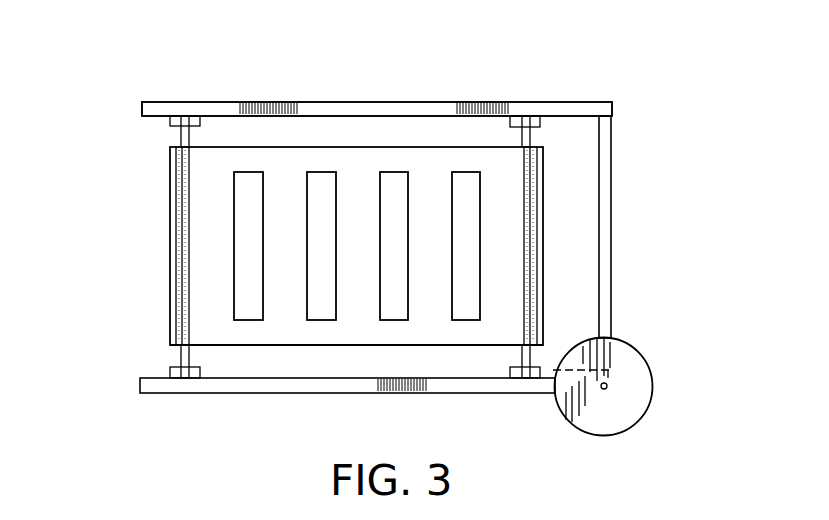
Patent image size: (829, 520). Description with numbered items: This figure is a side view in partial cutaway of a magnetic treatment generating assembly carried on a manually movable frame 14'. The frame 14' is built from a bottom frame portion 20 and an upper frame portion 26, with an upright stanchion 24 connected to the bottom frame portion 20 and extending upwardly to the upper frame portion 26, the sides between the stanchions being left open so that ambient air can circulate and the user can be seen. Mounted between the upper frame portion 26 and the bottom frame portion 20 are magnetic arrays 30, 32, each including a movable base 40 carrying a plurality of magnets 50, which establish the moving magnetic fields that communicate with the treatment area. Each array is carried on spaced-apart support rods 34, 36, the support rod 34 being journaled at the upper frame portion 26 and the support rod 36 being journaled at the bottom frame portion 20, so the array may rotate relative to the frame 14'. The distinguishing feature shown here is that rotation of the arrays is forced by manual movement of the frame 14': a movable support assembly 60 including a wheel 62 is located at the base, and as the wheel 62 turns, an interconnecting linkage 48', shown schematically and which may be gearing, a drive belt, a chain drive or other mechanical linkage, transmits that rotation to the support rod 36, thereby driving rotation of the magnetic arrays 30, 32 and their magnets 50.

The frame 14' is at (428, 83).
The bottom frame portion 20 is at (232, 386).
The upright stanchions 24 is at (604, 222).
The upper frame portion 26 is at (412, 108).
The magnetic array 30 is at (169, 250).
The magnetic array 32 is at (356, 246).
The support rod 34 is at (182, 138).
The support rod 36 is at (517, 362).
The movable base 40 is at (315, 348).
The interconnecting linkage 48' is at (582, 320).
The magnets 50 is at (245, 223).
The movable support assembly 60 is at (646, 348).
The wheel 62 is at (653, 387).